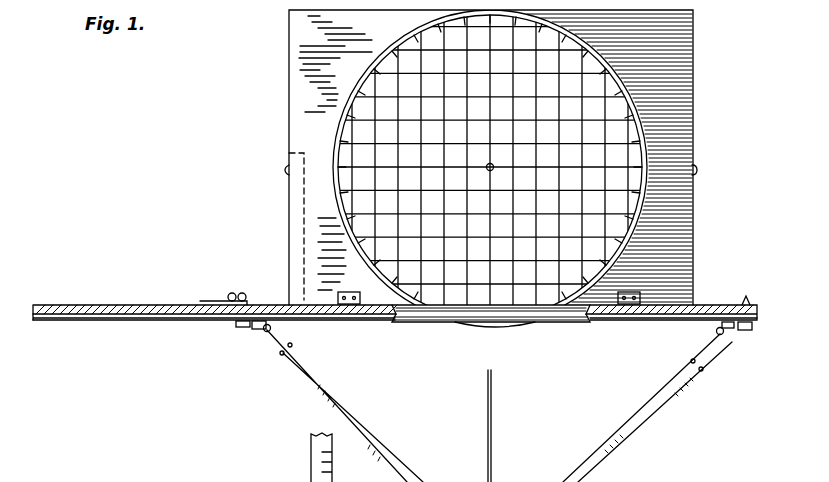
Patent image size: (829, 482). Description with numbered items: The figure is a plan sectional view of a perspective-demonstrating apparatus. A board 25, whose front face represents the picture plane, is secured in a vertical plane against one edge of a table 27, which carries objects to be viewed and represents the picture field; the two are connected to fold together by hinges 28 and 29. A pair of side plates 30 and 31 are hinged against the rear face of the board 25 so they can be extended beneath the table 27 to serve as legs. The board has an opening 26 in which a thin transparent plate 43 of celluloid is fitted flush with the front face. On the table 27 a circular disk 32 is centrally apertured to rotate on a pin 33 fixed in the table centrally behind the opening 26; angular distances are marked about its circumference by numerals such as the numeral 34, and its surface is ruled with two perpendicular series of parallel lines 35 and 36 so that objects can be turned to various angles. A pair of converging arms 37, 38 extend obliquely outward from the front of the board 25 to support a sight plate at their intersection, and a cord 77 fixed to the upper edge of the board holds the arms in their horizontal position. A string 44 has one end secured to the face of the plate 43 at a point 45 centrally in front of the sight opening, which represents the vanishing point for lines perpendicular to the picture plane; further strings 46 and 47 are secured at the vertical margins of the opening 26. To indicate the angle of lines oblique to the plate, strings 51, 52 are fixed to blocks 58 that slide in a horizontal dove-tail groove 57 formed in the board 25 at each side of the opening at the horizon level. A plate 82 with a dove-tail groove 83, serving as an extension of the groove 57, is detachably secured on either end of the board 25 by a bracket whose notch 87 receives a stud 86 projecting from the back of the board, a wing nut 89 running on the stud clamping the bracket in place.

The board 25 is at (650, 316).
The opening 26 is at (530, 300).
The table 27 is at (335, 64).
The hinge 28 is at (350, 292).
The hinge 29 is at (636, 292).
The side plate 30 is at (289, 207).
The side plate 31 is at (690, 207).
The disk 32 is at (490, 167).
The pin 33 is at (493, 167).
The numeral 34 is at (650, 126).
The parallel lines 35 is at (492, 270).
The parallel lines 36 is at (532, 227).
The arm 37 is at (375, 460).
The arm 38 is at (612, 442).
The transparent plate 43 is at (410, 322).
The string 44 is at (488, 330).
The point 45 is at (500, 328).
The string 46 is at (396, 322).
The string 47 is at (590, 325).
The string 51 is at (265, 331).
The string 52 is at (721, 335).
The dove-tail groove 57 is at (318, 322).
The block 58 is at (238, 324).
The cord 77 is at (492, 400).
The plate 82 is at (125, 305).
The dove-tail groove 83 is at (172, 320).
The stud 86 is at (233, 292).
The notch 87 is at (214, 300).
The wing nut 89 is at (243, 293).